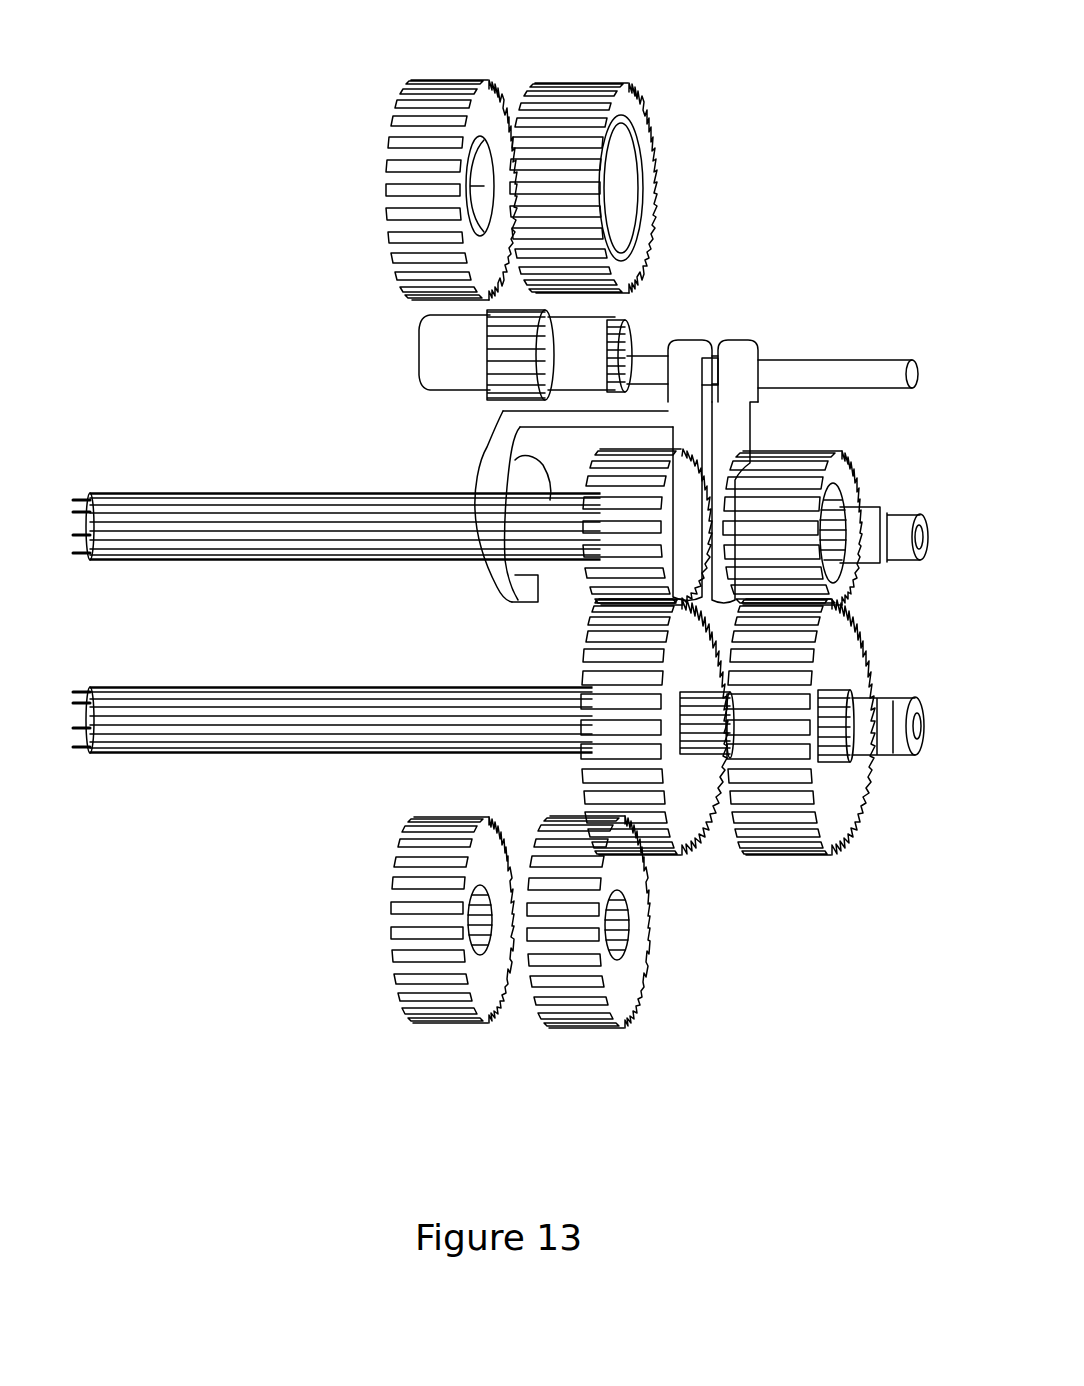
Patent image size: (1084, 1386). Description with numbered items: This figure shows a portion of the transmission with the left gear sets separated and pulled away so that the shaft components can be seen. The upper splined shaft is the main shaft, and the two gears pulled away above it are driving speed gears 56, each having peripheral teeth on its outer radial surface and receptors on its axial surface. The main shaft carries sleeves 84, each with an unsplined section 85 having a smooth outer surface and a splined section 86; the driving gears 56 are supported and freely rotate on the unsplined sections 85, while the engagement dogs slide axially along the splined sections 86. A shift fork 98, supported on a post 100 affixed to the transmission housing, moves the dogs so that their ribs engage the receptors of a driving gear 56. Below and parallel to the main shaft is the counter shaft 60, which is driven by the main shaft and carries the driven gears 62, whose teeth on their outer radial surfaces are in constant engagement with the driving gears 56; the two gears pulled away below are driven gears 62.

The driving speed gear 56 is at (490, 80).
The counter shaft 60 is at (240, 755).
The driven gear 62 is at (790, 858).
The sleeve 84 is at (613, 323).
The unsplined section 85 is at (415, 388).
The splined section 86 is at (482, 306).
The shift fork 98 is at (740, 438).
The post 100 is at (803, 358).